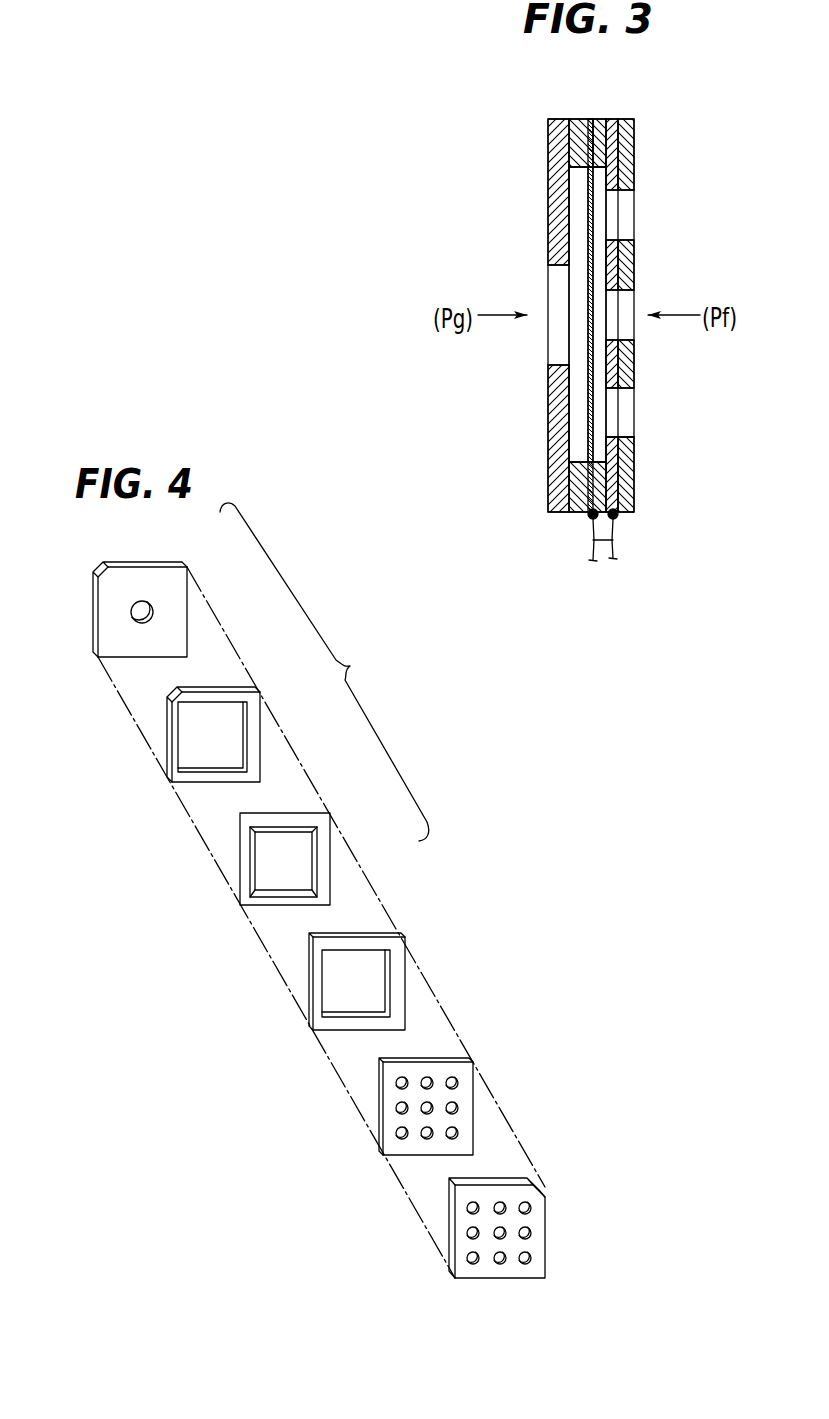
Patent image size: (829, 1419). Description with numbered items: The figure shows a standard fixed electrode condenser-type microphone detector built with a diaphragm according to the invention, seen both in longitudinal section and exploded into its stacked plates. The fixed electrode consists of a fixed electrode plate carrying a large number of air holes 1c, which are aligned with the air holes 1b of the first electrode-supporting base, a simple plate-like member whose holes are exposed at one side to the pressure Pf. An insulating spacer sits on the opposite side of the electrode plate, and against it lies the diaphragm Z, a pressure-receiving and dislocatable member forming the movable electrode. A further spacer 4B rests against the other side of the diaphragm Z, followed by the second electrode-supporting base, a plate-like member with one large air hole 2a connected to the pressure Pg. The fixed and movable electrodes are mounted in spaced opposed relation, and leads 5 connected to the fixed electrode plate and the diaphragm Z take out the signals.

In FIG. 3, the air holes 1b is at (622, 224).
In FIG. 4, the air holes 1b is at (525, 1264).
In FIG. 3, the air holes 1c is at (614, 318).
In FIG. 4, the air holes 1c is at (397, 1107).
In FIG. 3, the air hole 2a is at (562, 302).
In FIG. 4, the air hole 2a is at (138, 613).
In FIG. 3, the spacer 4B is at (580, 118).
In FIG. 4, the spacer 4B is at (263, 732).
In FIG. 3, the diaphragm Z is at (587, 416).
In FIG. 4, the diaphragm Z is at (333, 858).
In FIG. 3, the leads 5 is at (598, 541).